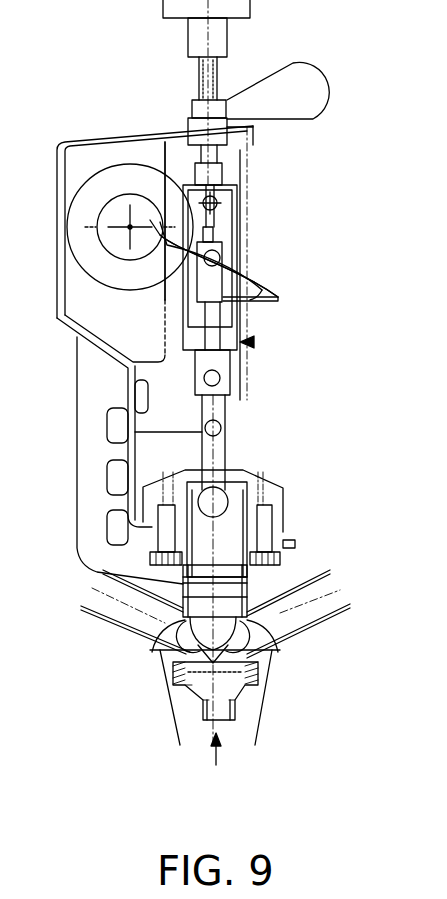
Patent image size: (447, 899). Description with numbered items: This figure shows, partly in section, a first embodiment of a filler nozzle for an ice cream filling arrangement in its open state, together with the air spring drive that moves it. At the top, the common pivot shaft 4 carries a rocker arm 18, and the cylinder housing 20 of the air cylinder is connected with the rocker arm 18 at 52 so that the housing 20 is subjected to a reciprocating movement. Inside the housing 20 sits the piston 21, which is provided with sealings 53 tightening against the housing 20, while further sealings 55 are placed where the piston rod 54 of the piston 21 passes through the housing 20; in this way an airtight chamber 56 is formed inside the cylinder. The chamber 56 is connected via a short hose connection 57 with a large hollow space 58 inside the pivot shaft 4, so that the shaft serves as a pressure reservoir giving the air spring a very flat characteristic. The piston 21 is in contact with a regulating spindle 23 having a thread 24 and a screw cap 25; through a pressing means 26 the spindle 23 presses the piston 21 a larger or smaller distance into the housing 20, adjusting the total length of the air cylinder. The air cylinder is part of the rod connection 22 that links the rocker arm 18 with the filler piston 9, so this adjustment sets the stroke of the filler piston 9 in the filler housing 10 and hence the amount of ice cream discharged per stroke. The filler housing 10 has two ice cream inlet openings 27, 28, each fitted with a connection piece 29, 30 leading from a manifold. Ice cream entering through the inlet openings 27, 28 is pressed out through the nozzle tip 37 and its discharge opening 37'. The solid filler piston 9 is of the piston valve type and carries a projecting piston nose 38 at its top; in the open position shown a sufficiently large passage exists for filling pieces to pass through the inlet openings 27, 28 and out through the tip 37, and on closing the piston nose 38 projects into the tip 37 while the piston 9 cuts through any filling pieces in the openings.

The pivot shaft 4 is at (97, 182).
The filler piston 9 is at (223, 577).
The filler housing 10 is at (262, 580).
The rocker arm 18 is at (163, 200).
The cylinder housing 20 is at (240, 315).
The piston 21 is at (212, 238).
The rod connection 22 is at (218, 410).
The regulating spindle 23 is at (220, 80).
The thread 24 is at (199, 78).
The screw cap 25 is at (320, 90).
The pressing means 26 is at (222, 178).
The ice cream inlet opening 27 is at (270, 630).
The ice cream inlet opening 28 is at (156, 630).
The connection piece 29 is at (330, 622).
The connection piece 30 is at (102, 622).
The nozzle tip 37 is at (251, 720).
The discharge opening 37' is at (186, 776).
The piston nose 38 is at (250, 667).
The connection of housing with rocker arm 52 is at (218, 220).
The sealings 53 is at (170, 252).
The piston rod 54 is at (200, 290).
The sealings 55 is at (176, 344).
The airtight chamber 56 is at (254, 342).
The hose connection 57 is at (265, 278).
The hollow space 58 is at (103, 216).